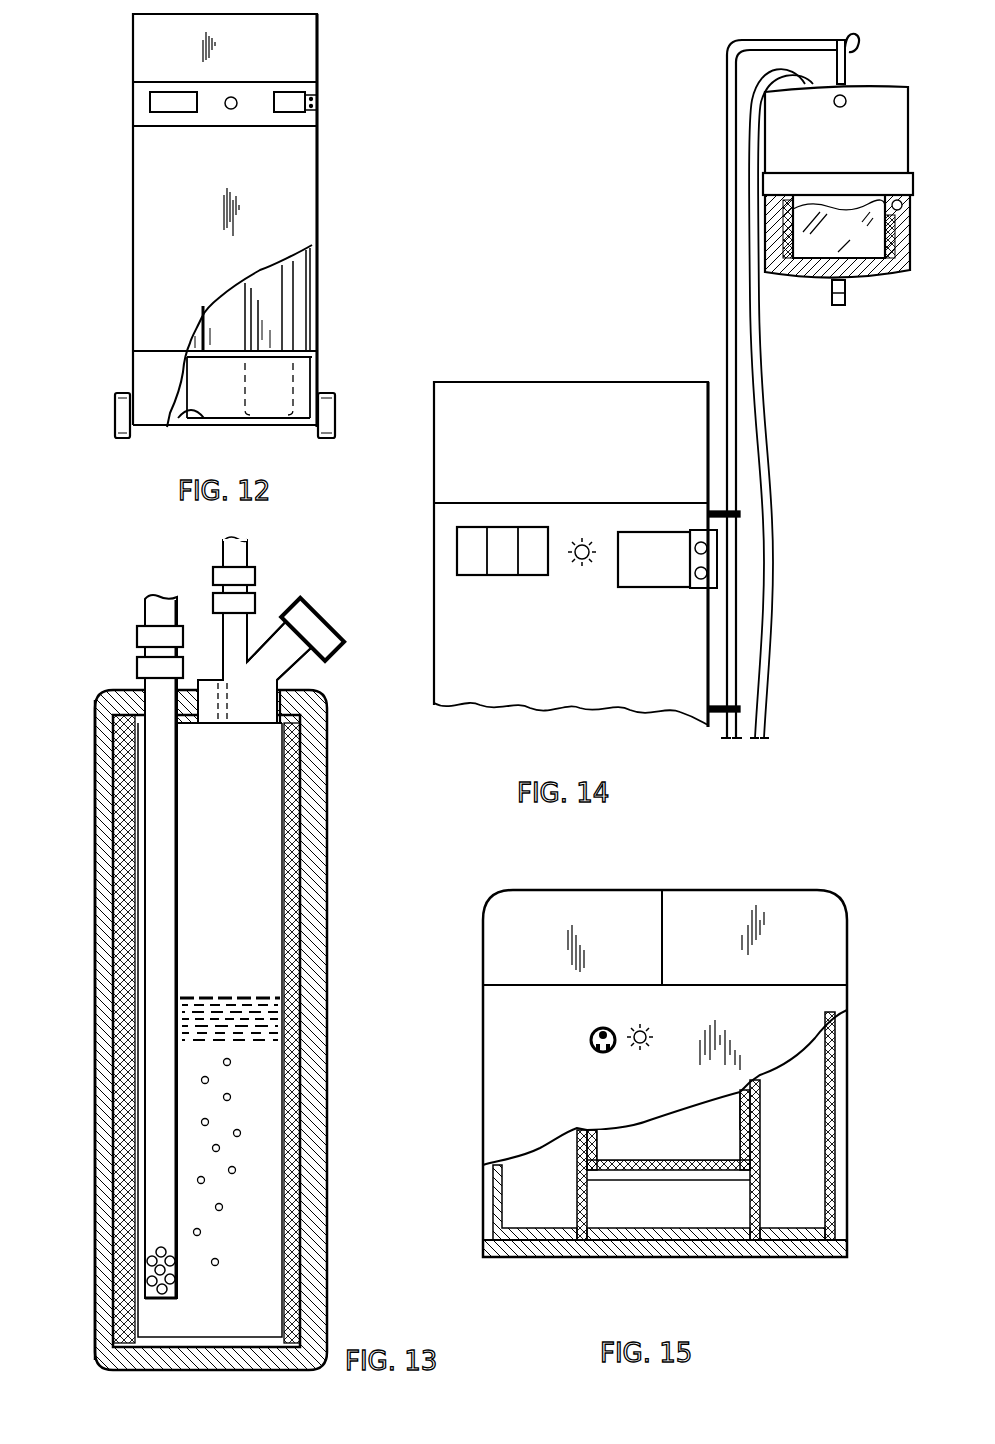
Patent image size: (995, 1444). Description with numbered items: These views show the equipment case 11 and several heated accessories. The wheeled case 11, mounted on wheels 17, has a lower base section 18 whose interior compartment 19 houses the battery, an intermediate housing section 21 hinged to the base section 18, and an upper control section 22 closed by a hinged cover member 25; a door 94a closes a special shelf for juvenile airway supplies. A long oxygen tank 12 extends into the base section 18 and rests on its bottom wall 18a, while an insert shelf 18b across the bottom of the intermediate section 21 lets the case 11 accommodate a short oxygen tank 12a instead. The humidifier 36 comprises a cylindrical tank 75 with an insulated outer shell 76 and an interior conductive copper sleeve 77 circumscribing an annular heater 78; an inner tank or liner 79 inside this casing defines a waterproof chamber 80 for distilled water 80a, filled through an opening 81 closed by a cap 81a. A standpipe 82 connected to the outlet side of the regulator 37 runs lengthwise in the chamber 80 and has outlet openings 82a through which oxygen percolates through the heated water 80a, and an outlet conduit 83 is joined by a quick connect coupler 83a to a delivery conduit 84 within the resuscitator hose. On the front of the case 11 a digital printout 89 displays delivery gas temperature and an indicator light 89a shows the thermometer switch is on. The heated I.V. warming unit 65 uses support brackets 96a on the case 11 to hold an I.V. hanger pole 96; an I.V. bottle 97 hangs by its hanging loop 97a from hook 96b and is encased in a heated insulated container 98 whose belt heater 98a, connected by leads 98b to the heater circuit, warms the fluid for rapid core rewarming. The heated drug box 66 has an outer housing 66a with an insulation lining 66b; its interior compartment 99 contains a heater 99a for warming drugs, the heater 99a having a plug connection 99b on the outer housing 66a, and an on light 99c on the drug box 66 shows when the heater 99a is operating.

In FIG. 12, the equipment case 11 is at (322, 168).
In FIG. 14, the equipment case 11 is at (540, 364).
In FIG. 12, the upper control section 22 is at (128, 55).
In FIG. 14, the upper control section 22 is at (585, 458).
In FIG. 12, the cover member 25 is at (318, 52).
In FIG. 12, the door 94a is at (290, 98).
In FIG. 14, the door 94a is at (665, 553).
In FIG. 12, the intermediate housing section 21 is at (158, 216).
In FIG. 14, the intermediate housing section 21 is at (608, 700).
In FIG. 12, the short oxygen tank 12a is at (296, 275).
In FIG. 12, the oxygen tank 12 is at (310, 365).
In FIG. 12, the insert shelf 18b is at (230, 350).
In FIG. 12, the interior compartment 19 is at (205, 378).
In FIG. 12, the lower base section 18 is at (323, 378).
In FIG. 12, the bottom wall 18a is at (177, 418).
In FIG. 12, the wheels 17 is at (117, 398).
In FIG. 13, the humidifier 36 is at (211, 944).
In FIG. 13, the cylindrical tank 75 is at (332, 860).
In FIG. 13, the insulated outer shell 76 is at (105, 842).
In FIG. 13, the conductive copper sleeve 77 is at (112, 878).
In FIG. 13, the inner tank or liner 79 is at (290, 1105).
In FIG. 13, the annular heater 78 is at (290, 965).
In FIG. 13, the interior waterproof chamber 80 is at (160, 1027).
In FIG. 13, the distilled water 80a is at (178, 1022).
In FIG. 13, the delivery conduit 84 is at (237, 538).
In FIG. 13, the quick connect coupler 83a is at (215, 572).
In FIG. 13, the outlet conduit 83 is at (223, 637).
In FIG. 13, the opening 81 is at (273, 647).
In FIG. 13, the cap 81a is at (303, 601).
In FIG. 13, the standpipe 82 is at (160, 1082).
In FIG. 13, the regulator 37 is at (145, 605).
In FIG. 13, the outlet openings 82a is at (150, 1258).
In FIG. 14, the digital printout 89 is at (468, 574).
In FIG. 14, the indicator light 89a is at (582, 568).
In FIG. 14, the heated I.V. warming unit 65 is at (783, 373).
In FIG. 14, the I.V. hanger pole 96 is at (727, 258).
In FIG. 14, the support brackets 96a is at (740, 514).
In FIG. 14, the hanging loop 97a is at (848, 73).
In FIG. 14, the hook 96b is at (851, 44).
In FIG. 14, the leads 98b is at (766, 462).
In FIG. 14, the I.V. bottle 97 is at (888, 276).
In FIG. 14, the heated insulated container 98 is at (784, 277).
In FIG. 14, the belt heater 98a is at (785, 220).
In FIG. 15, the heated drug box 66 is at (478, 1131).
In FIG. 15, the insulation lining 66b is at (831, 1203).
In FIG. 15, the outer housing 66a is at (843, 1165).
In FIG. 15, the interior compartment 99 is at (651, 1202).
In FIG. 15, the heater 99a is at (676, 1148).
In FIG. 15, the plug connection 99b is at (598, 1052).
In FIG. 15, the lamp 99c is at (647, 1050).